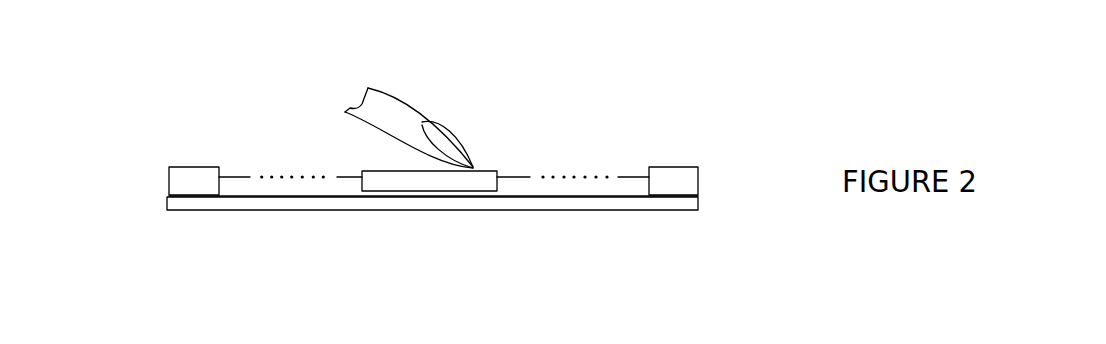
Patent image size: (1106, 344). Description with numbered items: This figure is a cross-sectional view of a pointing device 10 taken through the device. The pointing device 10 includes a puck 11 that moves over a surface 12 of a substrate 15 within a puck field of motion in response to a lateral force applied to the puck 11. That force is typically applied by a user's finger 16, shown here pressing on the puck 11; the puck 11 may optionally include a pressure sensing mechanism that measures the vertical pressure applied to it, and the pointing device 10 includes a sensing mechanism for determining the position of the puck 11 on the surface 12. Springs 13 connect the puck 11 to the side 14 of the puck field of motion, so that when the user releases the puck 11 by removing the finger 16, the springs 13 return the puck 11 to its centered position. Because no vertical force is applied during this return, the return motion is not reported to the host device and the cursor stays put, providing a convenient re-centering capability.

The pointing device 10 is at (122, 137).
The puck 11 is at (423, 182).
The surface 12 is at (303, 194).
The springs 13 is at (517, 177).
The side of the puck field of motion 14 is at (695, 172).
The substrate 15 is at (457, 210).
The user's finger 16 is at (408, 108).